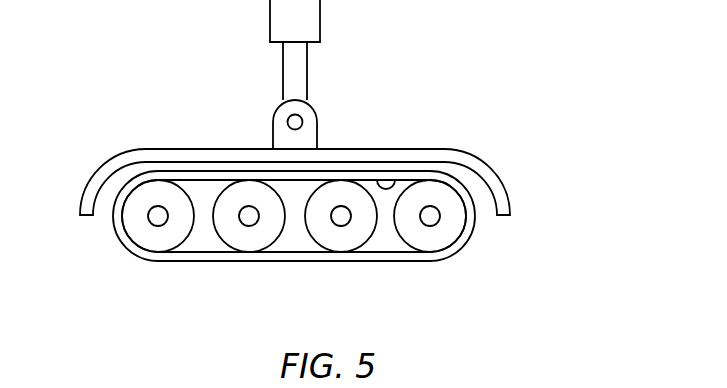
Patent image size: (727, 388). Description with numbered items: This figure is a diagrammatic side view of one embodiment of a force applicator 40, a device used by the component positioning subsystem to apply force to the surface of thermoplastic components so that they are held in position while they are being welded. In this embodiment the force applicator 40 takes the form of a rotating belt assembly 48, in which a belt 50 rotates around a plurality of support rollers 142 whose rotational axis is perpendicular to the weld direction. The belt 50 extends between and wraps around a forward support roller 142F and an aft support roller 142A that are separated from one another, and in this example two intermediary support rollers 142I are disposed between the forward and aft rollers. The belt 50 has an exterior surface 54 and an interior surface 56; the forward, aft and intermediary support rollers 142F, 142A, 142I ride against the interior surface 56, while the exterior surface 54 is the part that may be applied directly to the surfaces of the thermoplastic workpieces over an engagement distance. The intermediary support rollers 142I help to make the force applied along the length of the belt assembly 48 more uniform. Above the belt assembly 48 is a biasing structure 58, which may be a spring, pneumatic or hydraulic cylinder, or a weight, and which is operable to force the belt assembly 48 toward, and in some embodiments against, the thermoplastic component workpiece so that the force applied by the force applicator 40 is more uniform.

The force applicator 40 is at (480, 88).
The rotating belt assembly 48 is at (97, 238).
The belt 50 is at (470, 238).
The exterior surface 54 is at (373, 262).
The interior surface 56 is at (397, 190).
The biasing structure 58 is at (270, 12).
The support rollers 142 is at (298, 250).
The aft support roller 142A is at (148, 243).
The intermediary support rollers 142I is at (330, 243).
The forward support roller 142F is at (443, 245).